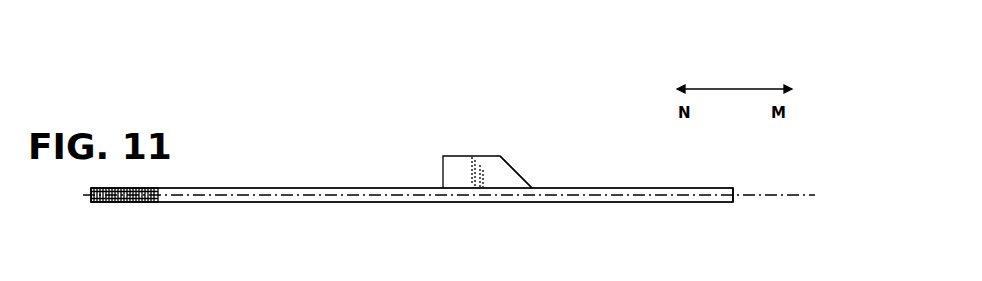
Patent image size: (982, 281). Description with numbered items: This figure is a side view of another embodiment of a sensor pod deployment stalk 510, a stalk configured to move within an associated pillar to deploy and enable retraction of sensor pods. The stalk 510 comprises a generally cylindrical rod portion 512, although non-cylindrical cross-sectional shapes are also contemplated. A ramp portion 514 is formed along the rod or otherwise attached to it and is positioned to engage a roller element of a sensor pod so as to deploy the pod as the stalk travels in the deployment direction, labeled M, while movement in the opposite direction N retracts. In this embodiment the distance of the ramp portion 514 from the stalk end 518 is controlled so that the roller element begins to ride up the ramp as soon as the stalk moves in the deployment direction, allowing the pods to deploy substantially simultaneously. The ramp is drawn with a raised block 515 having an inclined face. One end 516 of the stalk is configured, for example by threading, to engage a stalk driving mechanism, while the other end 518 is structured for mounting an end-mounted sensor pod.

The sensor pod deployment stalk 510 is at (492, 121).
The rod portion 512 is at (328, 204).
The ramp portion 514 is at (518, 176).
The stop block 515 is at (460, 156).
The end 516 is at (128, 204).
The end 518 is at (707, 203).